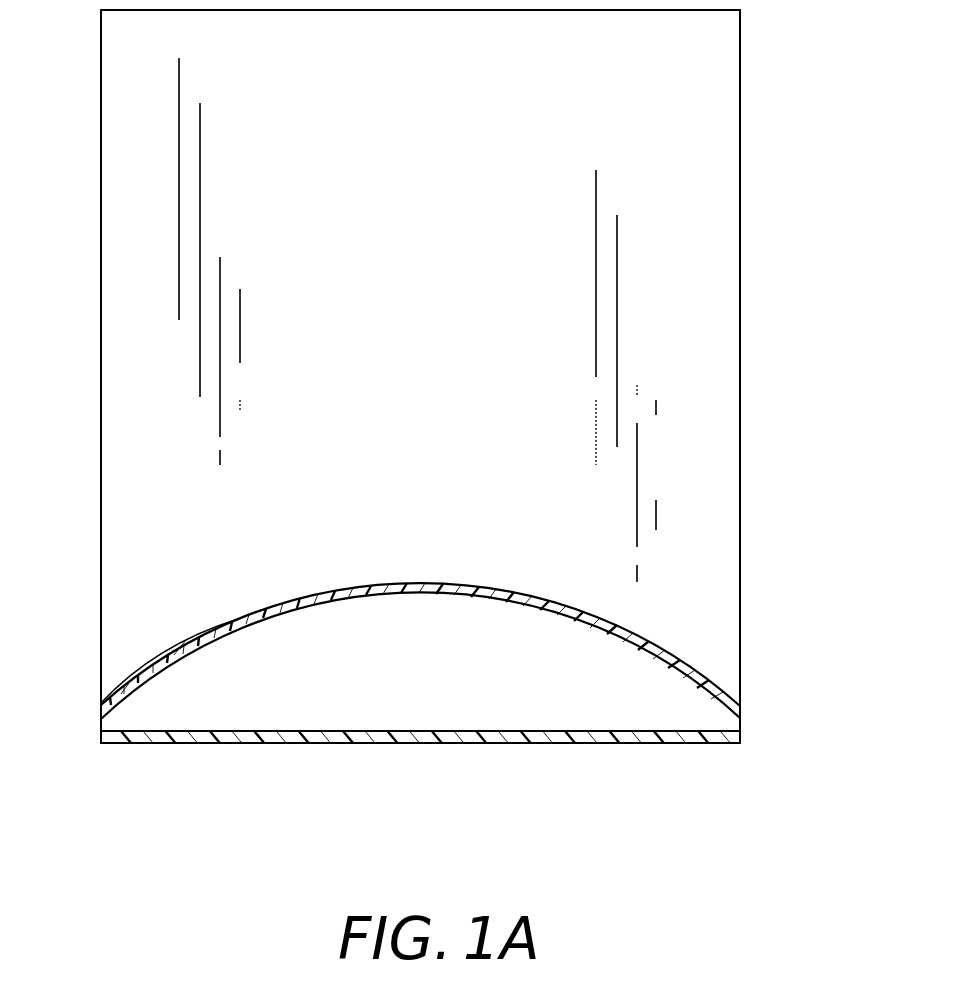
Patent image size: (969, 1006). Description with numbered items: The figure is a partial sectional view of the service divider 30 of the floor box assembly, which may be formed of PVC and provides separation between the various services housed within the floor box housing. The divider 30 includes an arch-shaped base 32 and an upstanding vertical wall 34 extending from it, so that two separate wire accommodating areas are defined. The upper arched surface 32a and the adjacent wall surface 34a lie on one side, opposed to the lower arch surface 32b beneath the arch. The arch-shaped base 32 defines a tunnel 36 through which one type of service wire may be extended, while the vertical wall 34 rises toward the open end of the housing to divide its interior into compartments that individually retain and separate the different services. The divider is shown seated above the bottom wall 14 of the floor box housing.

The service divider 30 is at (765, 165).
The upstanding vertical wall 34 is at (677, 330).
The wall surface 34a is at (192, 453).
The arch-shaped base 32 is at (713, 686).
The upper arched surface 32a is at (222, 623).
The lower arch surface 32b is at (590, 628).
The tunnel 36 is at (421, 682).
The bottom wall 14 is at (491, 735).